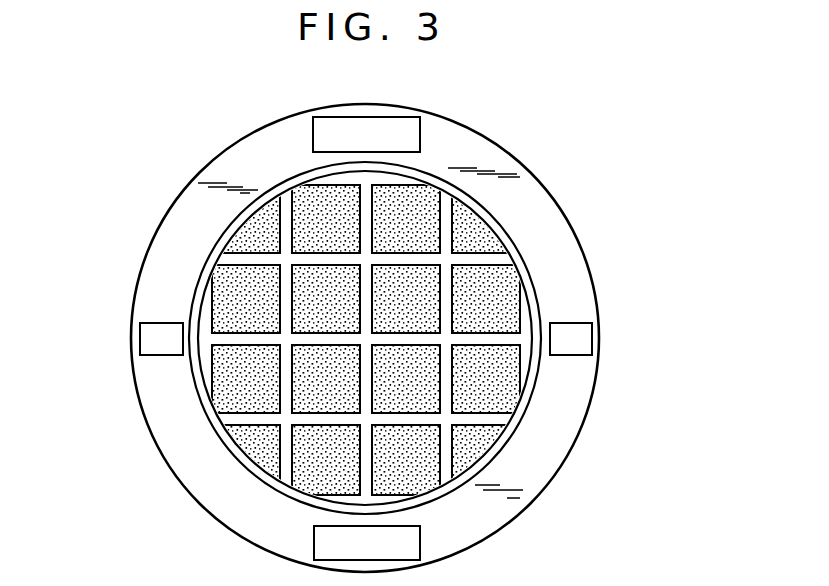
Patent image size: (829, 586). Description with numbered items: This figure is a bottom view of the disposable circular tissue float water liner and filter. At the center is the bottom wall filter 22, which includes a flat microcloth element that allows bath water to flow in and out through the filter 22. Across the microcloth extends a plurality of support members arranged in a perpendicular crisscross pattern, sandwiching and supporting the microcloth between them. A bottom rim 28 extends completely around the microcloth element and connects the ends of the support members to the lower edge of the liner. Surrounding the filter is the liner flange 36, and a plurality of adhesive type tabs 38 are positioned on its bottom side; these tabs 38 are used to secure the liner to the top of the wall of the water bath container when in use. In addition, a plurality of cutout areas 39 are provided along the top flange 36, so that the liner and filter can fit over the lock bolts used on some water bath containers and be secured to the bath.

The bottom wall filter 22 is at (314, 354).
The bottom rim 28 is at (495, 233).
The liner flange 36 is at (555, 450).
The adhesive type tabs 38 is at (408, 135).
The cutout areas 39 is at (592, 337).